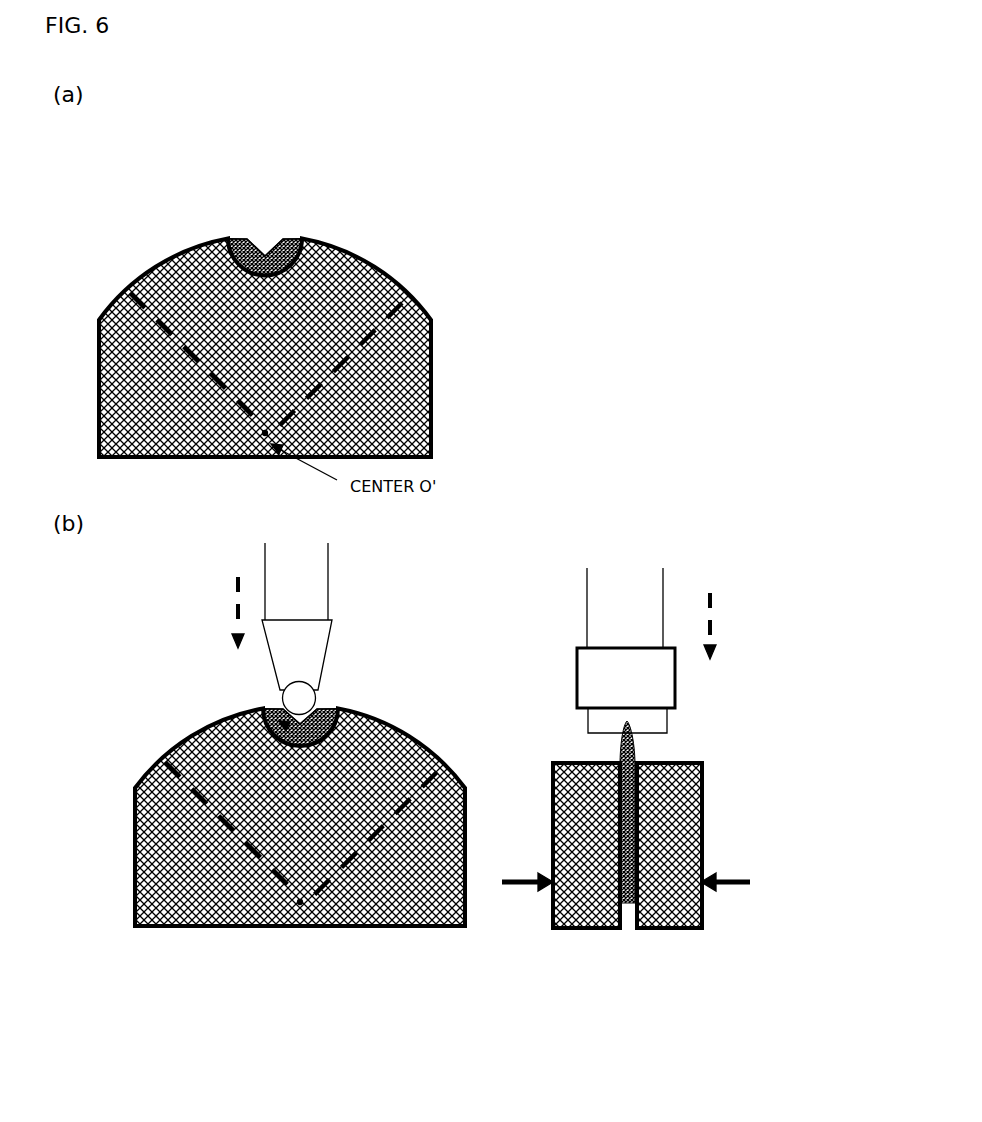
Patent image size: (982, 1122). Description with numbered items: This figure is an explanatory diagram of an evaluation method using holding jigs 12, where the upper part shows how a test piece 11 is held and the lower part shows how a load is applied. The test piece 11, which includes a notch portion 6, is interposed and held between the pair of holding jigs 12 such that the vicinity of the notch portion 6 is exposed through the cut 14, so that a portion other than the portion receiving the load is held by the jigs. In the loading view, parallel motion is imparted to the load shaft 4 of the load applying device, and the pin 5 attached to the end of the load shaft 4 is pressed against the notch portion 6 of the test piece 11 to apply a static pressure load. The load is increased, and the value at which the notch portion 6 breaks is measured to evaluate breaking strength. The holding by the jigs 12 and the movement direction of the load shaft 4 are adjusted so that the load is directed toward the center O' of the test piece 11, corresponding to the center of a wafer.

The load shaft 4 is at (566, 632).
The pin 5 is at (299, 698).
The notch portion 6 is at (262, 232).
The test piece 11 is at (295, 236).
The holding jig 12 is at (397, 385).
The cut 14 is at (296, 282).